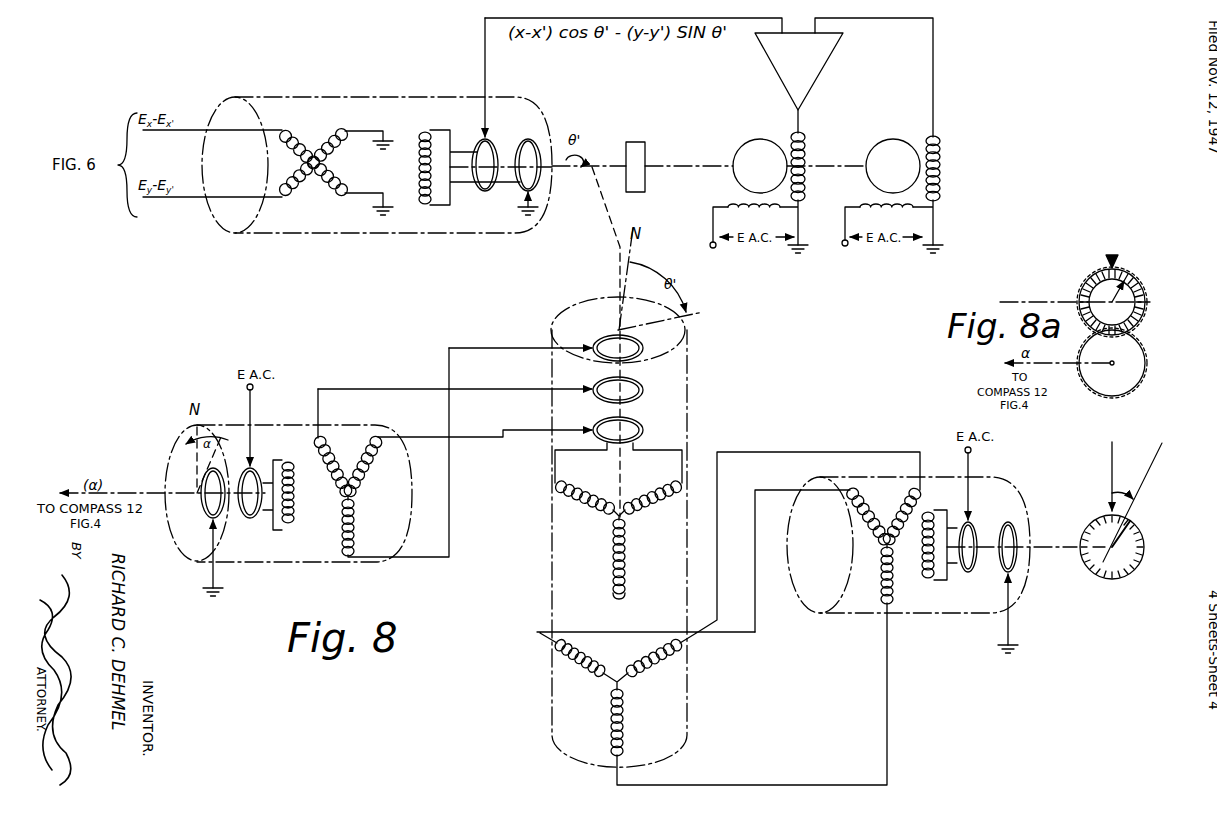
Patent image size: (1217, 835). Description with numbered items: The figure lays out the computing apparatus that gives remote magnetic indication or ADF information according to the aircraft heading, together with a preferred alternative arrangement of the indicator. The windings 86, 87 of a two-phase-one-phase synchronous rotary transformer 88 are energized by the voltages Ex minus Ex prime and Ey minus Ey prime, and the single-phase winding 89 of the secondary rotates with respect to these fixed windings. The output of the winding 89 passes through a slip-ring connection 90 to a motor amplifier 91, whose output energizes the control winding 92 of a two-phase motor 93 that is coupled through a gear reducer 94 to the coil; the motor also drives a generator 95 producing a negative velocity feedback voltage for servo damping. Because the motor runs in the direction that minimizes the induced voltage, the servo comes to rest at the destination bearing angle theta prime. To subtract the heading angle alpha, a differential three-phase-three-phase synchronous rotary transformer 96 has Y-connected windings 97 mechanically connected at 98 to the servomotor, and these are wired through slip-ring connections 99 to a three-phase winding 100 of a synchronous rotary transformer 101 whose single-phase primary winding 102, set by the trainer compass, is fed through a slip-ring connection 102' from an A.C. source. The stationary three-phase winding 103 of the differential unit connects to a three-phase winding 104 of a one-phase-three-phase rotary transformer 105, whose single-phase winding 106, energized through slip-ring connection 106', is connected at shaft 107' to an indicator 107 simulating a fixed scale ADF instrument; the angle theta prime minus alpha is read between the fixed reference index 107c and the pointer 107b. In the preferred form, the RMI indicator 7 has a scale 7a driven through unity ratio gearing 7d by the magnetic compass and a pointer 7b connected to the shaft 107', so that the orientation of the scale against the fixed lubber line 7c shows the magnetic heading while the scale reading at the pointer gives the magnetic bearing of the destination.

In FIG. 8A, the RMI indicator 7 is at (1120, 302).
In FIG. 8A, the scale 7a is at (1101, 273).
In FIG. 8A, the pointer 7b is at (1128, 301).
In FIG. 8A, the lubber line 7c is at (1118, 258).
In FIG. 8A, the unity ratio gearing 7d is at (1127, 333).
In FIG. 8, the winding 86 is at (295, 141).
In FIG. 8, the winding 87 is at (303, 193).
In FIG. 8, the two-phase-one-phase synchronous rotary transformer 88 is at (344, 97).
In FIG. 8, the single-phase winding 89 is at (420, 165).
In FIG. 8, the slip-ring connection 90 is at (525, 139).
In FIG. 8, the motor amplifier 91 is at (774, 76).
In FIG. 8, the control winding 92 is at (806, 150).
In FIG. 8, the two-phase motor 93 is at (740, 148).
In FIG. 8, the gear reducer 94 is at (636, 142).
In FIG. 8, the generator 95 is at (898, 139).
In FIG. 8, the differential three-phase-three-phase synchronous rotary transformer 96 is at (686, 655).
In FIG. 8, the Y-connected windings 97 is at (631, 526).
In FIG. 8, the mechanical connection 98 is at (608, 236).
In FIG. 8, the slip-ring connections 99 is at (642, 352).
In FIG. 8, the three-phase winding 100 is at (356, 498).
In FIG. 8, the synchronous rotary transformer 101 is at (264, 425).
In FIG. 8, the single-phase primary winding 102 is at (299, 495).
In FIG. 8, the slip-ring connection 102' is at (232, 507).
In FIG. 8, the three-phase winding 103 is at (630, 683).
In FIG. 8, the three-phase winding 104 is at (885, 550).
In FIG. 8, the one-phase-three-phase rotary transformer 105 is at (975, 614).
In FIG. 8, the single-phase winding 106 is at (932, 555).
In FIG. 8, the slip-ring connection 106' is at (988, 537).
In FIG. 8, the indicator 107 is at (1102, 568).
In FIG. 8A, the indicator 107 is at (1075, 293).
In FIG. 8, the shaft 107' is at (1056, 566).
In FIG. 8, the pointer 107b is at (1134, 534).
In FIG. 8, the fixed reference index 107c is at (1109, 476).